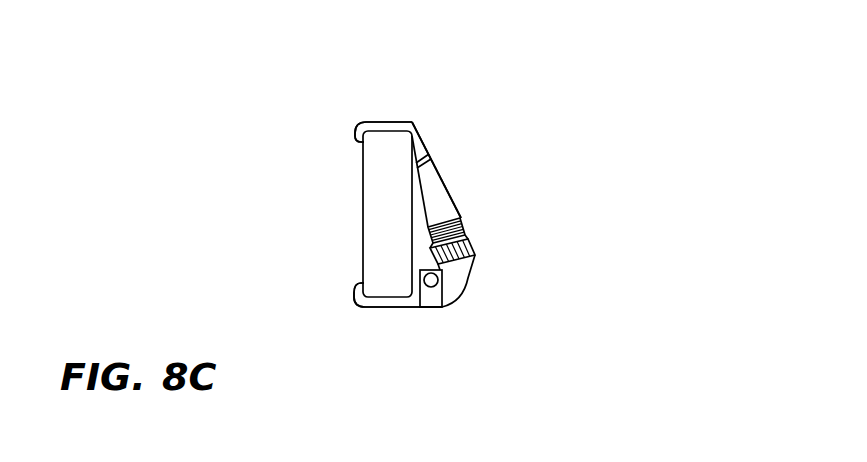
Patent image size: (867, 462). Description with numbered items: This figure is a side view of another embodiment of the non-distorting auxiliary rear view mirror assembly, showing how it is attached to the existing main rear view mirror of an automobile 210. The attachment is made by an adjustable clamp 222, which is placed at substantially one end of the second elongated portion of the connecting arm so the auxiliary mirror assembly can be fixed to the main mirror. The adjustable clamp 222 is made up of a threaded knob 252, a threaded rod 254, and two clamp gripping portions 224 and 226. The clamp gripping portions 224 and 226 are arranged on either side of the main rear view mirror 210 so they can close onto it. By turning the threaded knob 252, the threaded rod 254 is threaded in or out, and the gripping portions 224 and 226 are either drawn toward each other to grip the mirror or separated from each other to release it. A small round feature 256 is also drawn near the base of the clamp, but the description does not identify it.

The main rear view mirror of an automobile 210 is at (322, 221).
The adjustable clamp 222 is at (410, 94).
The clamp gripping portion 224 is at (348, 123).
The clamp gripping portion 226 is at (352, 311).
The threaded knob 252 is at (483, 263).
The threaded rod 254 is at (473, 214).
The pivot pin / aperture 256 is at (437, 296).